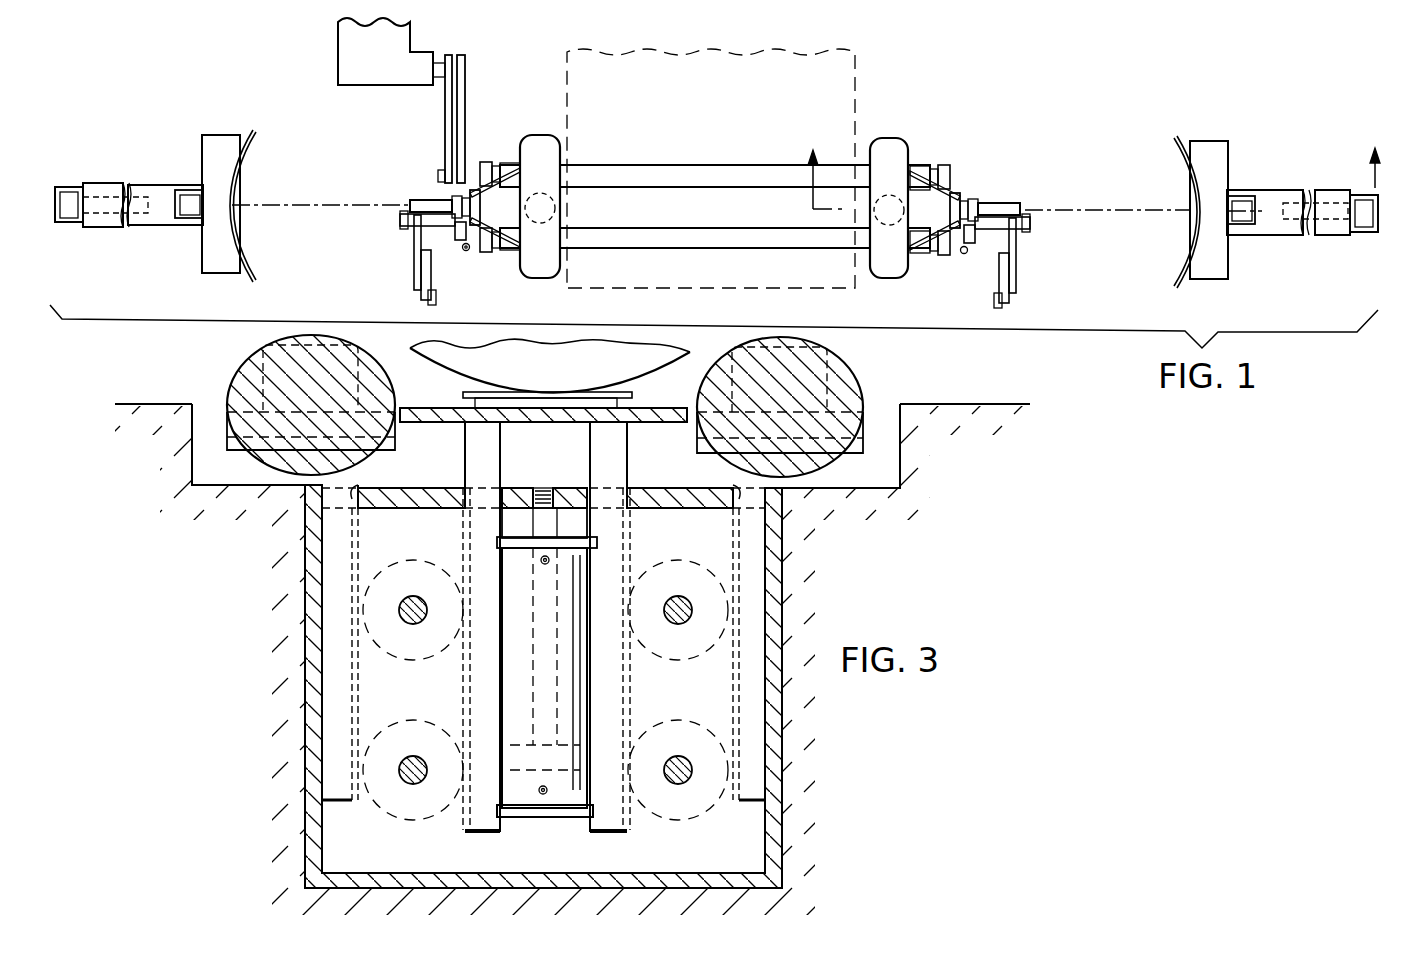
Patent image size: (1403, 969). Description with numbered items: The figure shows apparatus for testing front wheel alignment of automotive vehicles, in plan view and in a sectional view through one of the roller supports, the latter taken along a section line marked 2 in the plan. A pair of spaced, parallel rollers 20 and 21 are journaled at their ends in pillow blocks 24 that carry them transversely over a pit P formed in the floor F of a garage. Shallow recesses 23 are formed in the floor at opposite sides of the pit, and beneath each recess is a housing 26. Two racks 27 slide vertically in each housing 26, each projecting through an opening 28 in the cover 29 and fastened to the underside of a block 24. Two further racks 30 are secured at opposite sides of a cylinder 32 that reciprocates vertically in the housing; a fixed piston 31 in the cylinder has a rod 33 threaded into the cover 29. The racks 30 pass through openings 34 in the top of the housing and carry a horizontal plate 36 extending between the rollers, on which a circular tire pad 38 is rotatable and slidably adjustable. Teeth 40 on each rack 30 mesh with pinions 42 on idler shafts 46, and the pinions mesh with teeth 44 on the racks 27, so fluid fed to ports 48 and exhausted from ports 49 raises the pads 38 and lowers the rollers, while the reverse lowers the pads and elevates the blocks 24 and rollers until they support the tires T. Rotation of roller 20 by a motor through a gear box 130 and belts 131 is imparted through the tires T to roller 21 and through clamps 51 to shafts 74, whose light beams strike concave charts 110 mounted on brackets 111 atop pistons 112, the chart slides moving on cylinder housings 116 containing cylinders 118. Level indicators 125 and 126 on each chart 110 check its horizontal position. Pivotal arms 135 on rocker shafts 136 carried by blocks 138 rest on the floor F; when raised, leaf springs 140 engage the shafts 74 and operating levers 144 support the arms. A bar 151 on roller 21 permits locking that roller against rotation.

In FIG. 1, the section line 2 is at (1093, 167).
In FIG. 1, the roller 20 is at (684, 164).
In FIG. 3, the roller 20 is at (234, 368).
In FIG. 1, the idler roller 21 is at (684, 228).
In FIG. 3, the idler roller 21 is at (856, 360).
In FIG. 3, the shallow recess 23 is at (900, 472).
In FIG. 1, the pillow block 24 is at (486, 160).
In FIG. 3, the pillow block 24 is at (228, 420).
In FIG. 3, the housing 26 is at (302, 596).
In FIG. 3, the rack 27 is at (314, 522).
In FIG. 3, the opening 28 is at (382, 488).
In FIG. 3, the cover 29 is at (420, 482).
In FIG. 3, the rack 30 is at (499, 450).
In FIG. 3, the fixed piston 31 is at (573, 736).
In FIG. 3, the cylinder 32 is at (540, 818).
In FIG. 3, the rod 33 is at (535, 530).
In FIG. 3, the opening 34 is at (560, 488).
In FIG. 3, the plate 36 is at (434, 408).
In FIG. 1, the tire pad 38 is at (714, 206).
In FIG. 3, the tire pad 38 is at (444, 378).
In FIG. 3, the teeth 40 is at (464, 541).
In FIG. 3, the pinion 42 is at (422, 664).
In FIG. 3, the teeth 44 is at (356, 548).
In FIG. 3, the idler shaft 46 is at (406, 620).
In FIG. 3, the fluid inlet-outlet port 48 is at (547, 558).
In FIG. 3, the fluid inlet-outlet port 49 is at (548, 790).
In FIG. 1, the clamp 51 is at (465, 190).
In FIG. 1, the shaft 74 is at (410, 202).
In FIG. 1, the chart 110 is at (248, 152).
In FIG. 1, the bracket 111 is at (202, 150).
In FIG. 1, the piston 112 is at (194, 218).
In FIG. 1, the cylinder housing 116 is at (110, 226).
In FIG. 1, the cylinder 118 is at (70, 196).
In FIG. 1, the level indicator 125 is at (253, 132).
In FIG. 1, the level indicator 126 is at (253, 280).
In FIG. 1, the gear box 130 is at (338, 60).
In FIG. 1, the belt 131 is at (450, 116).
In FIG. 1, the pivotal arm 135 is at (414, 242).
In FIG. 1, the rocker shaft 136 is at (455, 238).
In FIG. 1, the block 138 is at (402, 221).
In FIG. 1, the leaf spring 140 is at (420, 274).
In FIG. 1, the operating lever 144 is at (432, 296).
In FIG. 1, the bar 151 is at (466, 254).
In FIG. 3, the floor F is at (969, 404).
In FIG. 1, the pit P is at (568, 70).
In FIG. 1, the tire T is at (546, 132).
In FIG. 3, the tire T is at (648, 372).